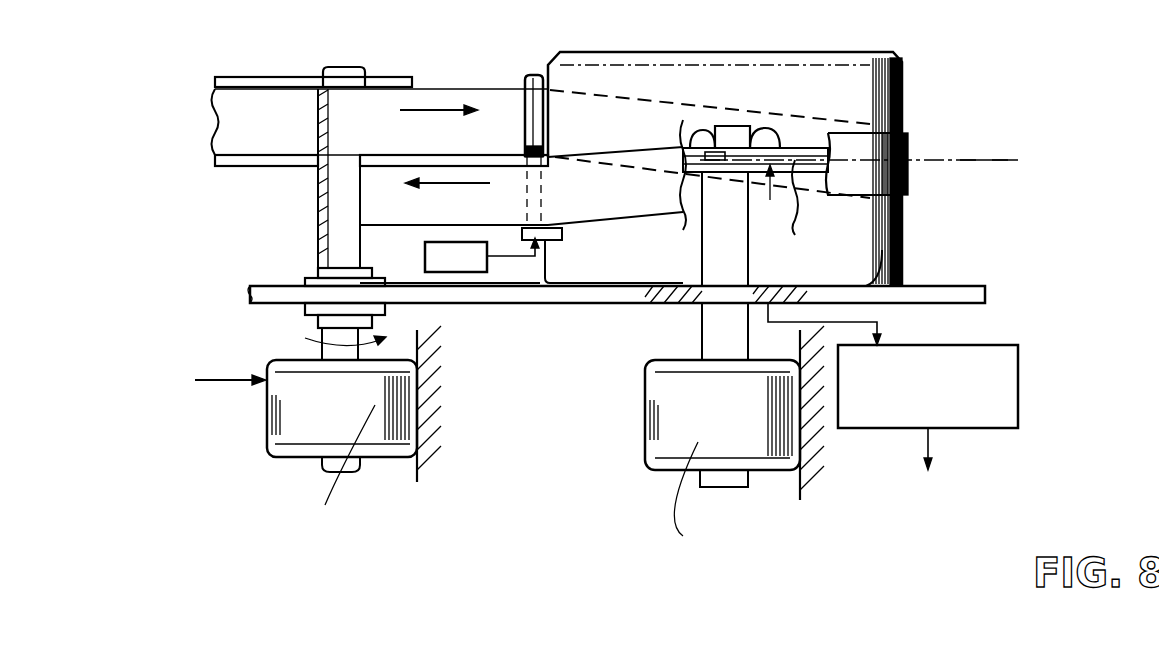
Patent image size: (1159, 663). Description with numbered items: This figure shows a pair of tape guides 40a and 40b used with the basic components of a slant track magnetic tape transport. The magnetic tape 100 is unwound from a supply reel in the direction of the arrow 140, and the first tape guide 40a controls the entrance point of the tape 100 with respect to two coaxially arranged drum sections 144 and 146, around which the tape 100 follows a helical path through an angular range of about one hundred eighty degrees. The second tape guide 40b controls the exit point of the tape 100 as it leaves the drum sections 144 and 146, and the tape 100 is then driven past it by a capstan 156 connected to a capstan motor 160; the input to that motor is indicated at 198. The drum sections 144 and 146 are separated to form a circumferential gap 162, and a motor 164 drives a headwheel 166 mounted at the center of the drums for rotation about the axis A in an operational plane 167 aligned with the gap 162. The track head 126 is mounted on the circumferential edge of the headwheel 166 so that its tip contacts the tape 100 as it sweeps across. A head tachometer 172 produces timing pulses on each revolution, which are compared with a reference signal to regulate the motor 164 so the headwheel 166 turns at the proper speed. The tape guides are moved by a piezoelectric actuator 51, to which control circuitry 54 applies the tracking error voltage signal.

The magnetic tape 100 is at (215, 105).
The arrow 140 is at (438, 110).
The first tape guide 40a is at (530, 75).
The second tape guide 40b is at (527, 153).
The control circuitry 54 is at (482, 183).
The piezoelectric actuator 51 is at (425, 255).
The drum section 144 is at (617, 95).
The track head 126 is at (690, 128).
The headwheel 166 is at (757, 140).
The headwheel rotation axis A is at (916, 158).
The operational plane 167 is at (1015, 162).
The circumferential gap 162 is at (797, 205).
The capstan 156 is at (340, 188).
The drum section 146 is at (602, 262).
The capstan motor control input 198 is at (228, 378).
The capstan motor 160 is at (268, 404).
The motor 164 is at (648, 422).
The head tachometer 172 is at (1000, 430).